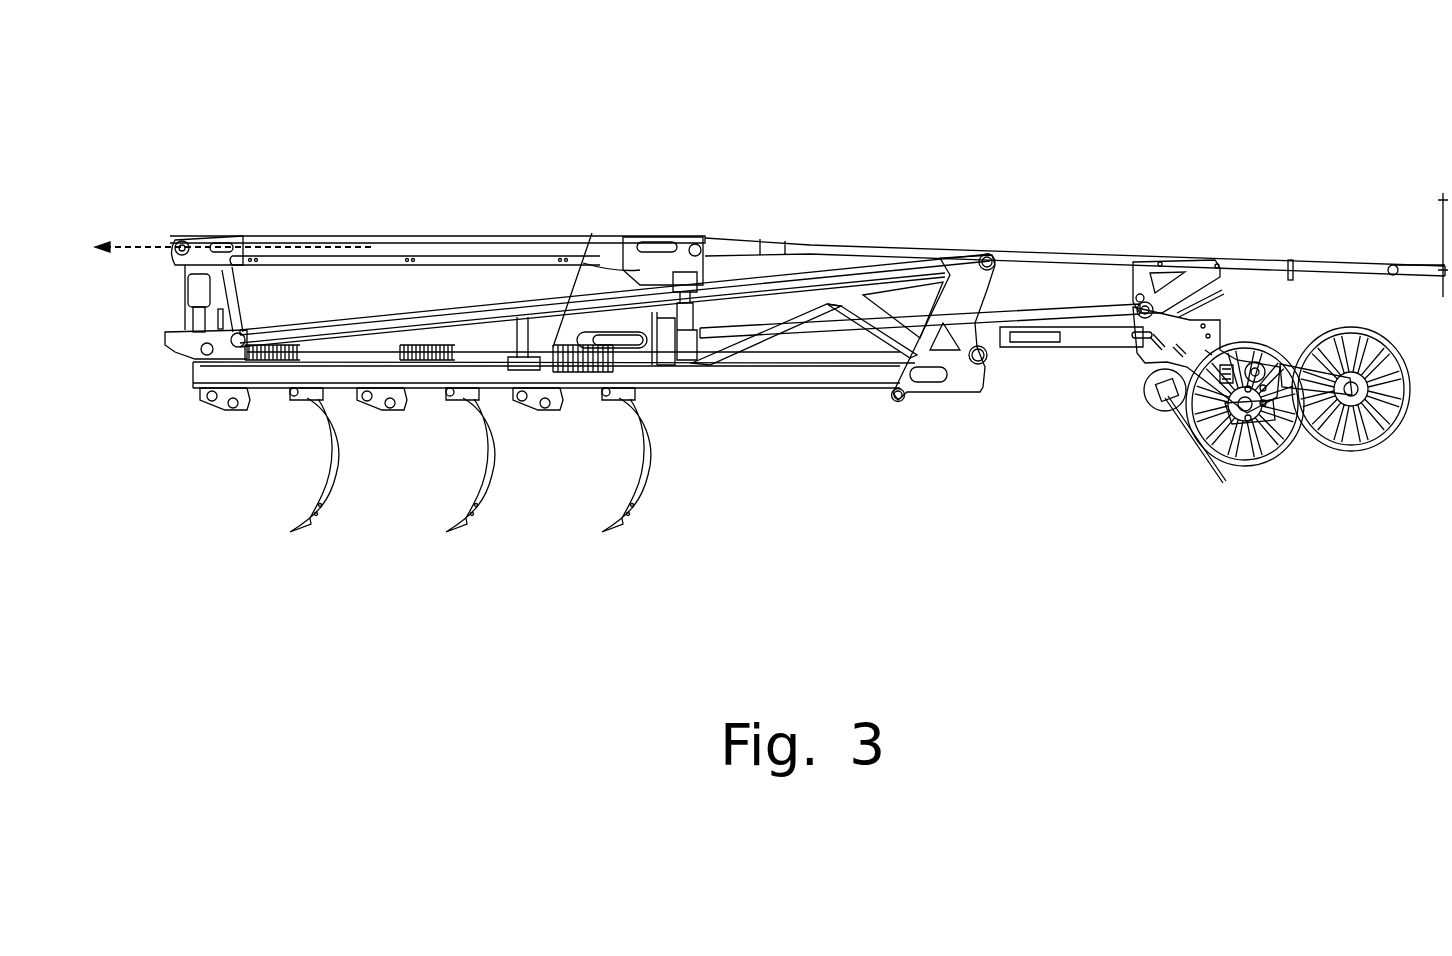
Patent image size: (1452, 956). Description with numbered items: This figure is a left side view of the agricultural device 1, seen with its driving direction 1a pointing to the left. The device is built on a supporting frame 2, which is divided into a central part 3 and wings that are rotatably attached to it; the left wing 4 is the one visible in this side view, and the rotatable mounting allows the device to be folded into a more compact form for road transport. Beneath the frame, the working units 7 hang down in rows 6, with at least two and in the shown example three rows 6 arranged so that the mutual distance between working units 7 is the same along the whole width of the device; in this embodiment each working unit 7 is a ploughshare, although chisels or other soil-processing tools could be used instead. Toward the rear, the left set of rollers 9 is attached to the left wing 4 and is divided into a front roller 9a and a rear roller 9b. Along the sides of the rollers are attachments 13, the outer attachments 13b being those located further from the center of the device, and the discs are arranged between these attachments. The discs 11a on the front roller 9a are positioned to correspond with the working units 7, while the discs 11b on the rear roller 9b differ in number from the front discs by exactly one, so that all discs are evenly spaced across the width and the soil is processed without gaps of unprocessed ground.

The agricultural device 1 is at (360, 143).
The driving direction 1a is at (115, 240).
The supporting frame 2 is at (222, 240).
The central part 3 is at (659, 244).
The left wing 4 is at (495, 312).
The row of working units 6 is at (452, 394).
The working unit 7 is at (308, 520).
The left set of rollers 9 is at (1197, 352).
The front roller 9a is at (1245, 403).
The rear roller 9b is at (1350, 390).
The discs on front rollers 11a is at (1207, 450).
The discs on rear rollers 11b is at (1327, 437).
The attachments 13 is at (1293, 383).
The outer attachments 13b is at (1253, 366).